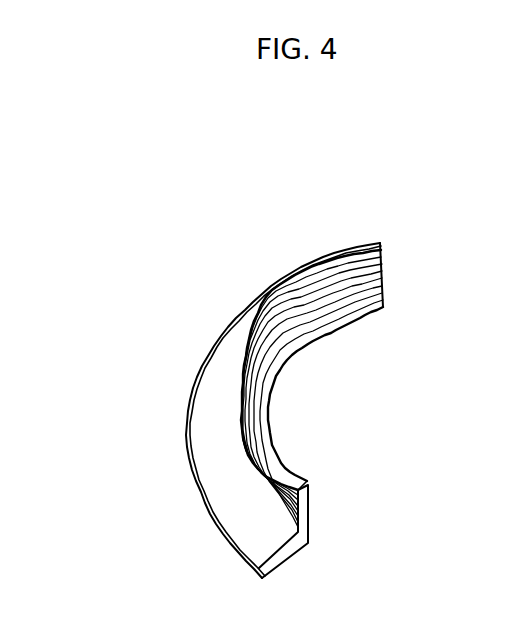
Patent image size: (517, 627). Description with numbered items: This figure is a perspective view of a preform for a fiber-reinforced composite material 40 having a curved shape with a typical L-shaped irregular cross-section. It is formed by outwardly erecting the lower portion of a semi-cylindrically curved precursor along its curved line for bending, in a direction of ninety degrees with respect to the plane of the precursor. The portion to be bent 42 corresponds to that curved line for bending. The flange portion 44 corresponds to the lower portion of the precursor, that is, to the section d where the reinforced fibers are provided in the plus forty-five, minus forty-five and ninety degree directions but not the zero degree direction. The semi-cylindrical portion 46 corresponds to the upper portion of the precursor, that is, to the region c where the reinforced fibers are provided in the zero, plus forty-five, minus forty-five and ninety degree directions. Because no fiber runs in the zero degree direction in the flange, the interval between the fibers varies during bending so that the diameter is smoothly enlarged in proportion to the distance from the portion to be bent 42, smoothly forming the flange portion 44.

The preform for a fiber-reinforced composite material 40 is at (234, 370).
The portion to be bent 42 is at (262, 503).
The flange portion 44 is at (212, 423).
The semi-cylindrical portion 46 is at (324, 303).
The region c is at (345, 277).
The section d is at (222, 355).